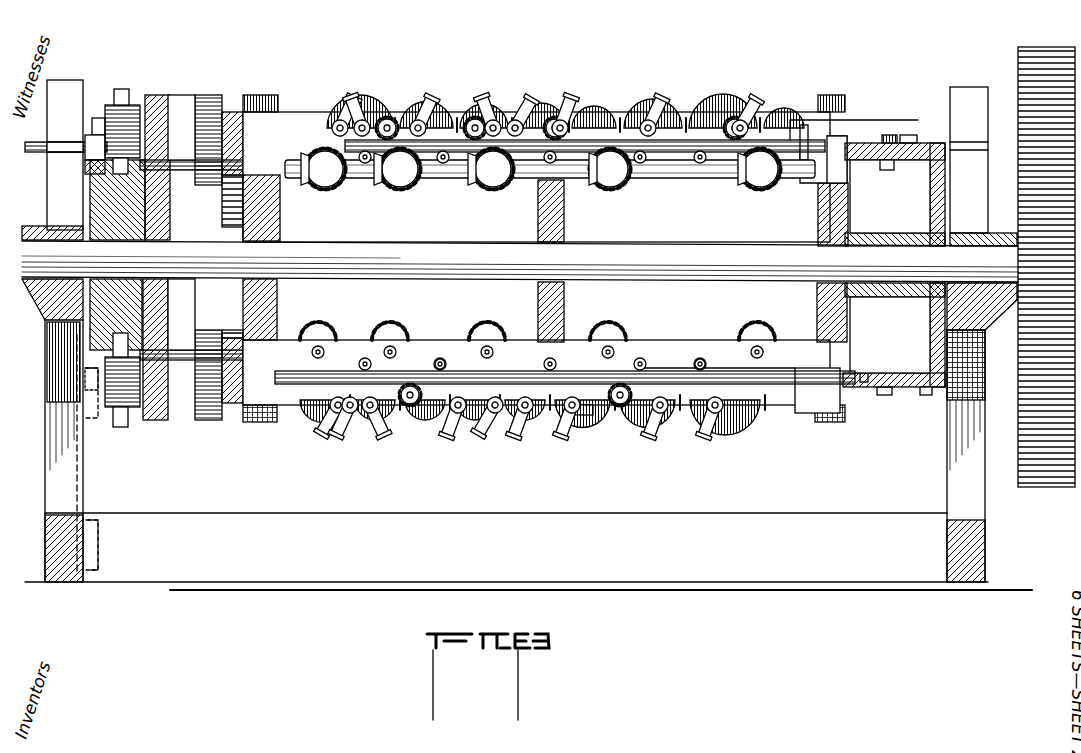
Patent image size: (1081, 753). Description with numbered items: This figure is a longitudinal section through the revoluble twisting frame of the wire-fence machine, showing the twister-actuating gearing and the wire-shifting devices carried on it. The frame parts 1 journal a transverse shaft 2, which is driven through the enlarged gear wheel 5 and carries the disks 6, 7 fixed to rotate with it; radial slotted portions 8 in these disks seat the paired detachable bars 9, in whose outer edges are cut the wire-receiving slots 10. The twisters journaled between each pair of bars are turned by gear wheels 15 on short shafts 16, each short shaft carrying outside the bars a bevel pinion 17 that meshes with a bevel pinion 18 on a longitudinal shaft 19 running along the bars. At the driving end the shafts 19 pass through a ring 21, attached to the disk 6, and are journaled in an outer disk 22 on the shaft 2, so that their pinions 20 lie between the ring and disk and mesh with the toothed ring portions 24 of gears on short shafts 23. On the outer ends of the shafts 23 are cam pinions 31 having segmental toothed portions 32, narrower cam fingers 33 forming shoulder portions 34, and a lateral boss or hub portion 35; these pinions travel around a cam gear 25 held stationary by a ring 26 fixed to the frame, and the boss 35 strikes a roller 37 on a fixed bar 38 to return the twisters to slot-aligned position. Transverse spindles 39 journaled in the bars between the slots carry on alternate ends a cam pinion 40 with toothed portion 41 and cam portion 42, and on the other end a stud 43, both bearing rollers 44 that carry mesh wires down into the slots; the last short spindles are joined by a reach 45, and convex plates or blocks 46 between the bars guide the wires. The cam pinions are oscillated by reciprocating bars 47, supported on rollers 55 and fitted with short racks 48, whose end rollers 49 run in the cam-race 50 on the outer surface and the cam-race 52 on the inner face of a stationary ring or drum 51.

The frame parts 1 is at (30, 462).
The shaft 2 is at (520, 261).
The enlarged gear wheel 5 is at (1040, 90).
The disk 6 is at (278, 305).
The disk 7 is at (538, 300).
The slotted portions 8 is at (265, 95).
The bars 9 is at (536, 258).
The slots 10 is at (610, 118).
The gear wheels 15 is at (318, 188).
The short shafts 16 is at (485, 350).
The bevel pinion 17 is at (405, 185).
The bevel pinions 18 is at (380, 185).
The longitudinal shafts 19 is at (470, 178).
The pinions 20 is at (228, 180).
The ring 21 is at (232, 300).
The disk 22 is at (150, 240).
The short shafts 23 is at (183, 130).
The toothed ring portion 24 is at (205, 95).
The cam gear 25 is at (45, 312).
The ring 26 is at (95, 172).
The cam pinions 31 is at (92, 145).
The segmental toothed portions 32 is at (96, 160).
The cam fingers 33 is at (120, 89).
The shoulder portions 34 is at (112, 105).
The boss or hub portion 35 is at (95, 124).
The roller 37 is at (88, 405).
The bar 38 is at (96, 520).
The spindles 39 is at (560, 150).
The cam pinion 40 is at (740, 95).
The toothed portion 41 is at (745, 125).
The cam portion 42 is at (545, 362).
The stud 43 is at (408, 118).
The roller 44 is at (540, 95).
The reach 45 is at (340, 92).
The plates or blocks 46 is at (482, 105).
The bars 47 is at (705, 150).
The short rack 48 is at (595, 155).
The roller 49 is at (890, 133).
The cam-race 50 is at (915, 395).
The ring or drum 51 is at (940, 150).
The cam-race 52 is at (875, 165).
The rollers 55 is at (362, 165).